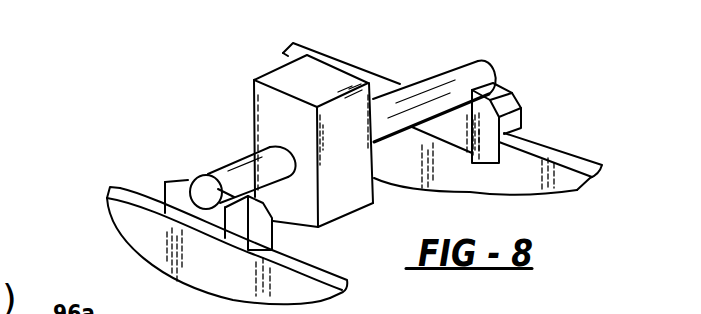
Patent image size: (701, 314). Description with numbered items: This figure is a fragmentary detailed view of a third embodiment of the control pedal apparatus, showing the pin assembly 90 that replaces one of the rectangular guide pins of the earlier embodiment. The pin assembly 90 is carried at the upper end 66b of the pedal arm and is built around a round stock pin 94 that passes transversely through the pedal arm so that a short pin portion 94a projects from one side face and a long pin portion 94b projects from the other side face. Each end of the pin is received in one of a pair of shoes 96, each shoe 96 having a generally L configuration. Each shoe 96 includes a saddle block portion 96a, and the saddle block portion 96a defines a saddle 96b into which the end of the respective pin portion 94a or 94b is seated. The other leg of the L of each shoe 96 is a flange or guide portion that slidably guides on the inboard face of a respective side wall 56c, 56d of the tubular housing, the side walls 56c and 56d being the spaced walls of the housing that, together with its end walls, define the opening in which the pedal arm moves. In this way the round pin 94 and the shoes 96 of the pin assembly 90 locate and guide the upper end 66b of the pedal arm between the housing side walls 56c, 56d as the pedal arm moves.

The upper end of the pedal arm 66b is at (276, 72).
The pin assembly 90 is at (192, 150).
The round stock pin 94 is at (422, 68).
The short pin portion 94a is at (226, 167).
The long pin portion 94b is at (473, 67).
The shoe 96 is at (161, 172).
The saddle block portion 96a is at (272, 225).
The saddle 96b is at (205, 209).
The side wall of tubular housing 56c is at (551, 148).
The side wall of tubular housing 56d is at (110, 213).